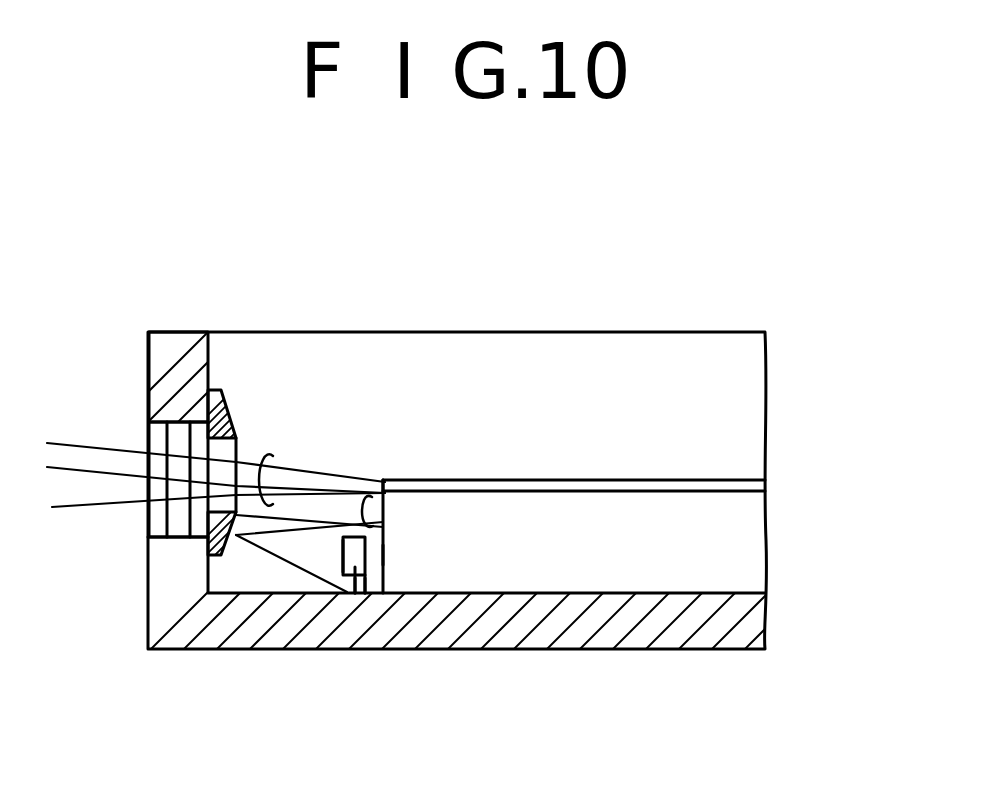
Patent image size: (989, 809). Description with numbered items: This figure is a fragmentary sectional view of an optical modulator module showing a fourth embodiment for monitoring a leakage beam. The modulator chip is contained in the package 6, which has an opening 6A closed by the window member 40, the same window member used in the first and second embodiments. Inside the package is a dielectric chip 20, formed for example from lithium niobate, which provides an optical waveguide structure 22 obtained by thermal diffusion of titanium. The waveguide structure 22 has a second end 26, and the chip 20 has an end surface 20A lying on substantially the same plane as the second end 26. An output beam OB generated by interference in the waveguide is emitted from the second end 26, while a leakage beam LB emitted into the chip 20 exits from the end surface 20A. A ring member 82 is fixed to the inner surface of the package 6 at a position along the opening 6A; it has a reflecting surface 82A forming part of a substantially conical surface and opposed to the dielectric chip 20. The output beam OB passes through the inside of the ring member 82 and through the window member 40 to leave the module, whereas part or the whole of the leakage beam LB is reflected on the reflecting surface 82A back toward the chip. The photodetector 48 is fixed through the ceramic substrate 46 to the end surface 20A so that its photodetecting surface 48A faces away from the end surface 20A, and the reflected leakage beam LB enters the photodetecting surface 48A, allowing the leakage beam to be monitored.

The package 6 is at (578, 650).
The opening 6A is at (152, 436).
The window member 40 is at (173, 422).
The ring member 82 is at (205, 493).
The reflecting surface 82A is at (230, 553).
The output beam OB is at (270, 451).
The leakage beam LB is at (358, 500).
The dielectric chip 20 is at (752, 538).
The end surface 20A is at (378, 548).
The optical waveguide structure 22 is at (532, 481).
The second end 26 is at (380, 480).
The ceramic substrate 46 is at (375, 580).
The photodetector 48 is at (355, 577).
The photodetecting surface 48A is at (343, 552).